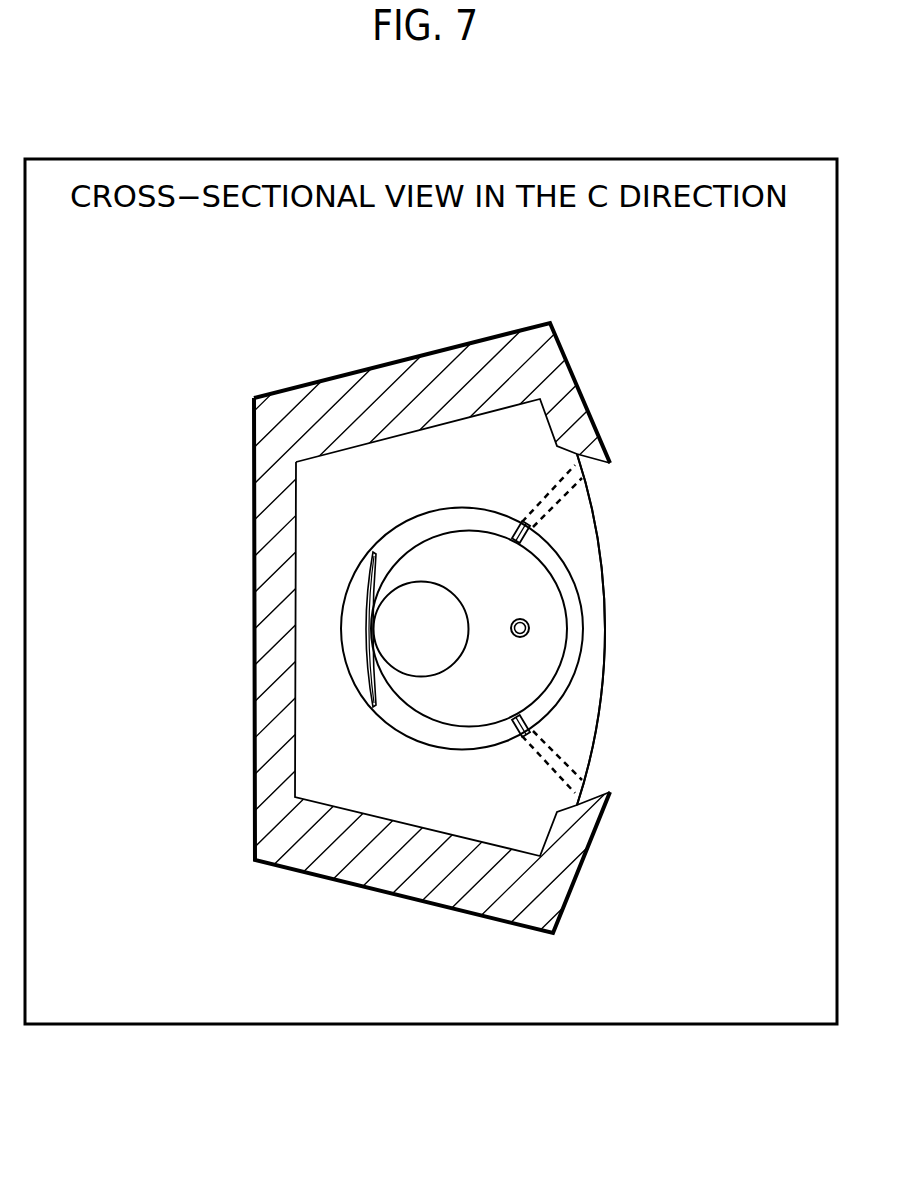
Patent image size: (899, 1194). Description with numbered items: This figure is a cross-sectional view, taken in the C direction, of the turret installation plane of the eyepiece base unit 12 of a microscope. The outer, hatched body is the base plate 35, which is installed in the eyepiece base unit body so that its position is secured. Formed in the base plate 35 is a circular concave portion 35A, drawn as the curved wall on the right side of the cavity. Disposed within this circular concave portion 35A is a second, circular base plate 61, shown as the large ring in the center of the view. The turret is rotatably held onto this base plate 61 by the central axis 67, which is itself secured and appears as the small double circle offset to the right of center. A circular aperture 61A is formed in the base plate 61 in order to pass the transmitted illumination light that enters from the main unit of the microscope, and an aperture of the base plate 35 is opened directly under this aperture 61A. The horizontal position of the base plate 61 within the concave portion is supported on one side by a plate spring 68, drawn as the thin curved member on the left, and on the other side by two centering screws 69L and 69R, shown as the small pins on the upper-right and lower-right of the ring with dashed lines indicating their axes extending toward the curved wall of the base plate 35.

The eyepiece base unit 12 is at (664, 330).
The base plate 35 is at (603, 687).
The circular concave portion 35A is at (567, 558).
The base plate 61 is at (562, 607).
The circular aperture 61A is at (443, 668).
The central axis 67 is at (528, 627).
The plate spring 68 is at (367, 628).
The centering screw 69R is at (560, 492).
The centering screw 69L is at (575, 768).